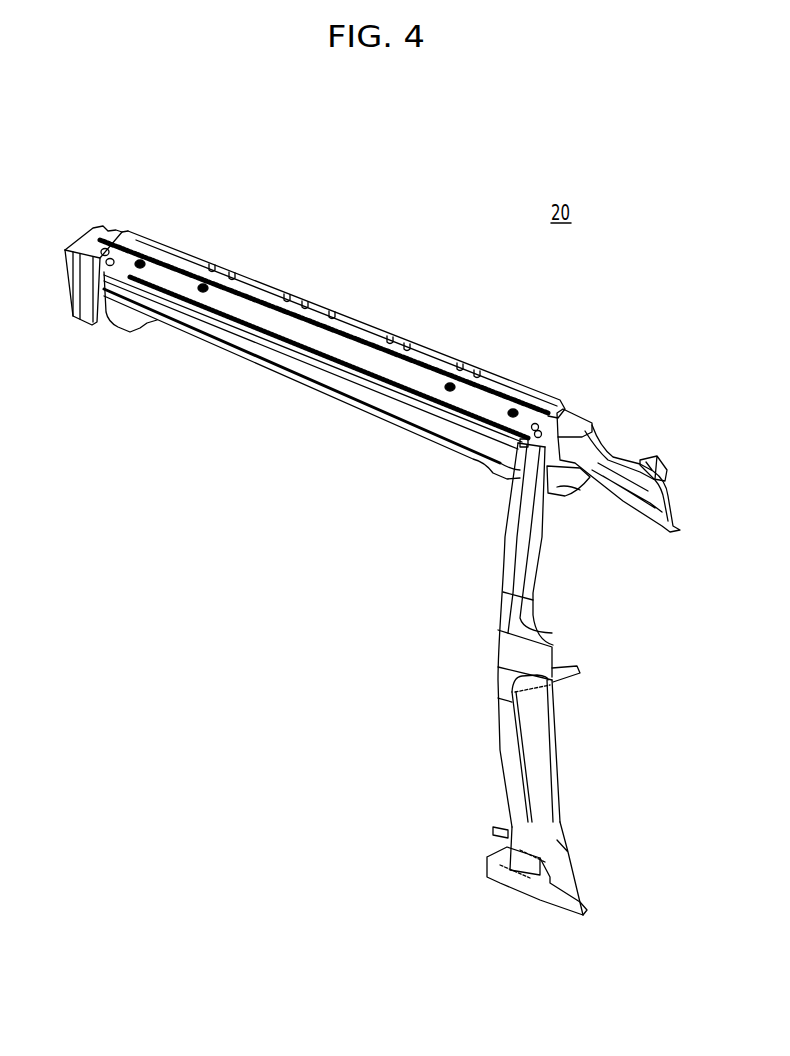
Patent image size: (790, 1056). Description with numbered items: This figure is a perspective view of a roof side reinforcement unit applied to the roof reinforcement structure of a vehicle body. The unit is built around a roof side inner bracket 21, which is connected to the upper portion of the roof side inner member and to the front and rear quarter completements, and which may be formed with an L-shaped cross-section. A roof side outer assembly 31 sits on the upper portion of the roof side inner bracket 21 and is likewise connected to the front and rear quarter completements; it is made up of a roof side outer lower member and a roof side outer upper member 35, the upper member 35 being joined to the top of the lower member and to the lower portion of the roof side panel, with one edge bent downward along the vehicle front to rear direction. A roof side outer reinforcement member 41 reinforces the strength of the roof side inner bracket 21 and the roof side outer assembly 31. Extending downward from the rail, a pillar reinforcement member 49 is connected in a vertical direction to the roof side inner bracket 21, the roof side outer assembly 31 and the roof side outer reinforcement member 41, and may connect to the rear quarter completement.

The roof side inner bracket 21 is at (314, 403).
The roof side outer assembly 31 is at (451, 344).
The roof side outer upper member 35 is at (256, 315).
The roof side outer reinforcement member 41 is at (621, 440).
The pillar reinforcement member 49 is at (513, 648).